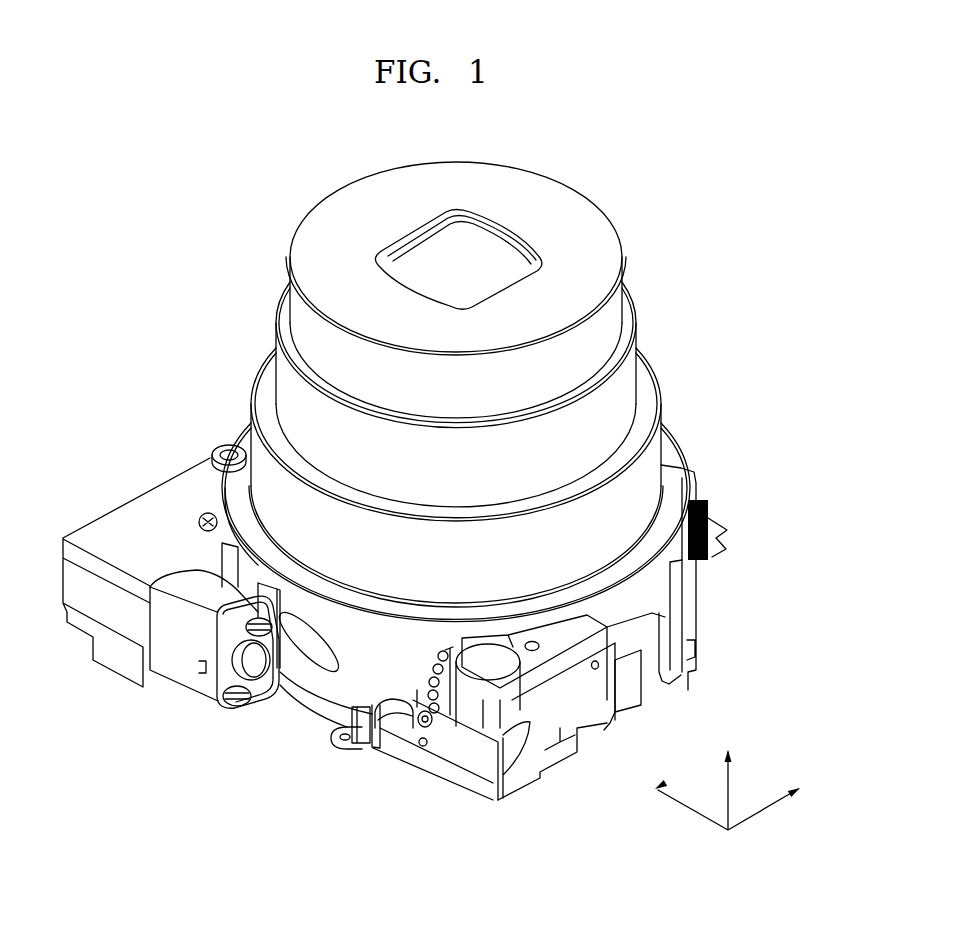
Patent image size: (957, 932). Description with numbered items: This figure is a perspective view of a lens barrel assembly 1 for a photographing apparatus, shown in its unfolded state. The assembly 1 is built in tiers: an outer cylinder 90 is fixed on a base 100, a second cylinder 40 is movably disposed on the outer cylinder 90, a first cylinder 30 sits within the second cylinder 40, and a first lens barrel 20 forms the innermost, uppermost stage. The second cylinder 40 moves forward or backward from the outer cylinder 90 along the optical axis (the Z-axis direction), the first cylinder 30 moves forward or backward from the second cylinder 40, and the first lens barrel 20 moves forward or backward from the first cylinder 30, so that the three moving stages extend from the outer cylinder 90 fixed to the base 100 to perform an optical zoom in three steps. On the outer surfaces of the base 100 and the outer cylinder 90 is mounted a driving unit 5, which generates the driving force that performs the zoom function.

The lens barrel assembly 1 is at (726, 318).
The first lens barrel 20 is at (629, 306).
The first cylinder 30 is at (636, 391).
The second cylinder 40 is at (661, 467).
The outer cylinder 90 is at (654, 597).
The driving unit 5 is at (187, 670).
The base 100 is at (413, 757).